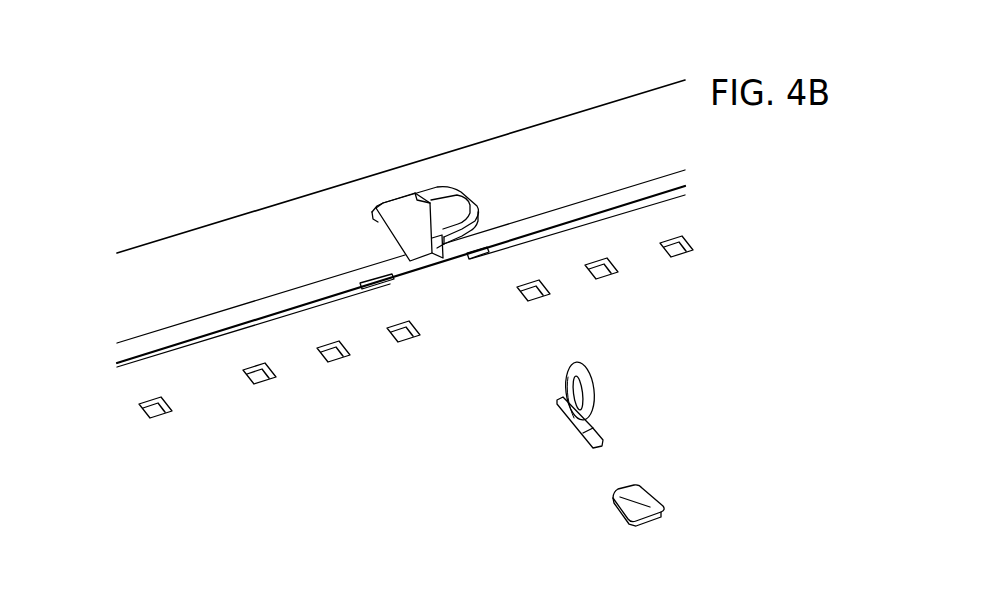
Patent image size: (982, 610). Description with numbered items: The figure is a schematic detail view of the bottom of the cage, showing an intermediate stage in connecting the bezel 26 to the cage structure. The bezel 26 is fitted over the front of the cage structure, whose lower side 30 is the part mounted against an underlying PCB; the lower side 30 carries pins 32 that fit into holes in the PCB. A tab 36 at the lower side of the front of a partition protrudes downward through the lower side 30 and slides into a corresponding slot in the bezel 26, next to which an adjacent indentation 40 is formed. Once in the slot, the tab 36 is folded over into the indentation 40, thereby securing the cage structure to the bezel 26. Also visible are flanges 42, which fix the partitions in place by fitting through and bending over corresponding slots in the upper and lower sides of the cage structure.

The bezel 26 is at (157, 258).
The lower side 30 is at (222, 492).
The pin 32 is at (593, 392).
The tab 36 is at (412, 215).
The indentation 40 is at (448, 215).
The flange 42 is at (637, 500).